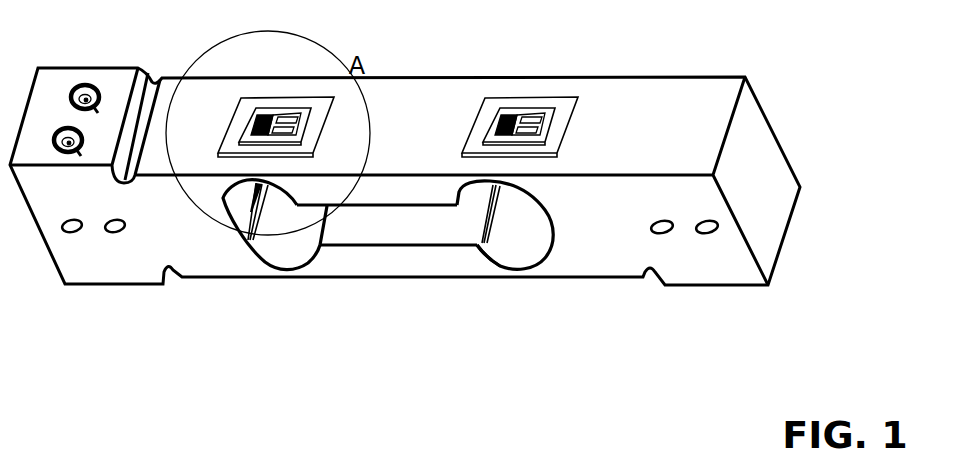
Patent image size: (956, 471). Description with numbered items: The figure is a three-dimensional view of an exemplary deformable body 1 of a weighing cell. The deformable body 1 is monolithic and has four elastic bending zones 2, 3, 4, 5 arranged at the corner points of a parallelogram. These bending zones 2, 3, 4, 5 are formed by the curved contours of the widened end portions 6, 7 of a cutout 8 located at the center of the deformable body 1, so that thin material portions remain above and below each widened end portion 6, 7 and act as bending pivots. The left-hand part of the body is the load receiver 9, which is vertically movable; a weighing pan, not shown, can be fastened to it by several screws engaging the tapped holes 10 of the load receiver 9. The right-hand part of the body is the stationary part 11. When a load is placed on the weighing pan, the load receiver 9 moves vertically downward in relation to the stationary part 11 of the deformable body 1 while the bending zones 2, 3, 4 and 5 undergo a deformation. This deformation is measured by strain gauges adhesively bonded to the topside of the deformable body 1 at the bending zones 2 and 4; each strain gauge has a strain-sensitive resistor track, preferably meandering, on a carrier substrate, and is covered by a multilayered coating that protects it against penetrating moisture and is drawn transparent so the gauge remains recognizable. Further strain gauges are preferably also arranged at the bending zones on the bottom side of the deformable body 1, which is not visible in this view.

The deformable body 1 is at (625, 294).
The elastic bending zone 2 is at (248, 183).
The elastic bending zone 3 is at (293, 270).
The elastic bending zone 4 is at (467, 240).
The elastic bending zone 5 is at (523, 270).
The widened end portion 6 is at (278, 242).
The widened end portion 7 is at (512, 240).
The cutout 8 is at (370, 224).
The load receiver 9 is at (90, 267).
The tapped holes 10 is at (63, 128).
The stationary part 11 is at (702, 248).